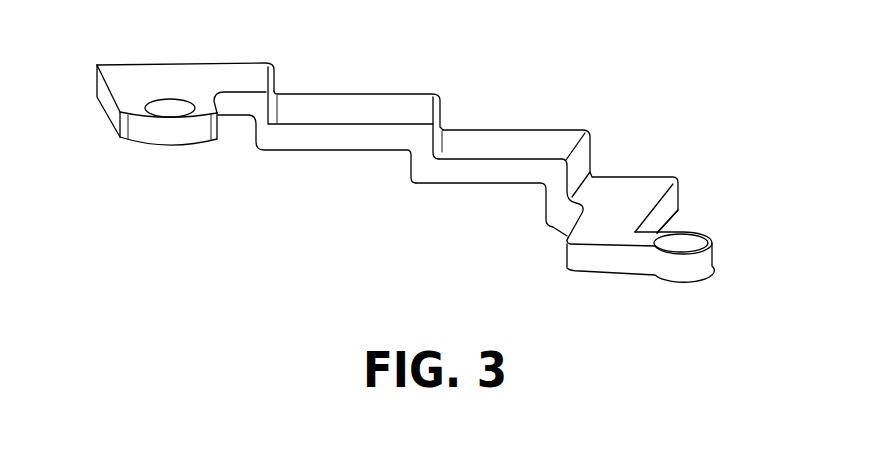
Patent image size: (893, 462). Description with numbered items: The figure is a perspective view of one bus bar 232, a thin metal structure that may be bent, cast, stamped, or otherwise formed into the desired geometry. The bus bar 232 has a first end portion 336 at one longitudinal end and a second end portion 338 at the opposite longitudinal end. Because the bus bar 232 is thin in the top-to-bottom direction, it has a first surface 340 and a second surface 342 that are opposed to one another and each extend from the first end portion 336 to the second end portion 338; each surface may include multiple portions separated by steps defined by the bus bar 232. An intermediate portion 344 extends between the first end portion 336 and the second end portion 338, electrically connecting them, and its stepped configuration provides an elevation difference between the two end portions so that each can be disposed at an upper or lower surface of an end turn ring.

The bus bar 232 is at (424, 143).
The first end portion 336 is at (722, 256).
The second end portion 338 is at (102, 125).
The first surface 340 is at (365, 153).
The second surface 342 is at (335, 110).
The intermediate portion 344 is at (470, 113).